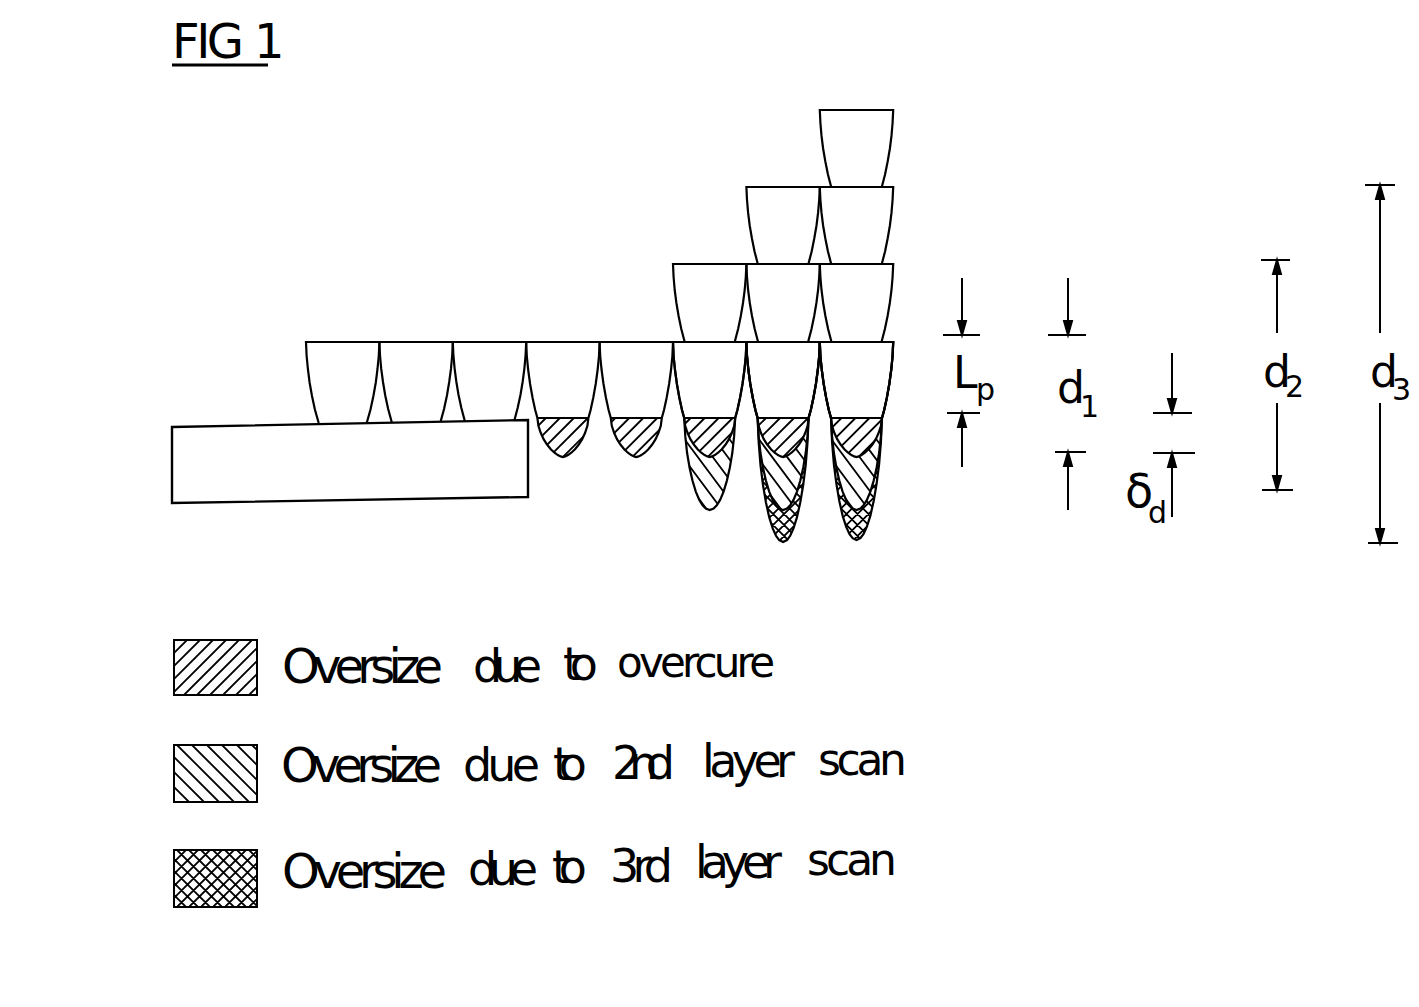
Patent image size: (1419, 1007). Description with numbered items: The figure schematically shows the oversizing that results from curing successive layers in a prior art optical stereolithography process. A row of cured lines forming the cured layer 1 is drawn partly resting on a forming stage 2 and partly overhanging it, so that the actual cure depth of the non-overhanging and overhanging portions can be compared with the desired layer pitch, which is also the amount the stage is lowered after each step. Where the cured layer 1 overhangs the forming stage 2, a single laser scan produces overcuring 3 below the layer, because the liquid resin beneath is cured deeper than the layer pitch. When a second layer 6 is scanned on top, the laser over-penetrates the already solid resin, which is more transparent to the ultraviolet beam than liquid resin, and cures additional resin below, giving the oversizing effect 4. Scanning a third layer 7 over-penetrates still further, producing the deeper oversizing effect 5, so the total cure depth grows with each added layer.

The cured layer 1 is at (483, 362).
The forming stage 2 is at (460, 483).
The overcuring 3 is at (565, 459).
The oversizing effect 4 is at (706, 483).
The oversizing effect 5 is at (788, 533).
The second layer 6 is at (873, 296).
The third layer 7 is at (873, 213).